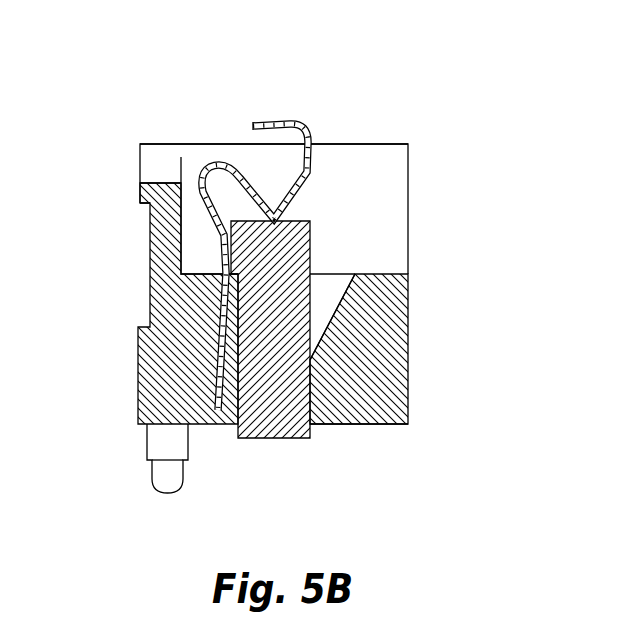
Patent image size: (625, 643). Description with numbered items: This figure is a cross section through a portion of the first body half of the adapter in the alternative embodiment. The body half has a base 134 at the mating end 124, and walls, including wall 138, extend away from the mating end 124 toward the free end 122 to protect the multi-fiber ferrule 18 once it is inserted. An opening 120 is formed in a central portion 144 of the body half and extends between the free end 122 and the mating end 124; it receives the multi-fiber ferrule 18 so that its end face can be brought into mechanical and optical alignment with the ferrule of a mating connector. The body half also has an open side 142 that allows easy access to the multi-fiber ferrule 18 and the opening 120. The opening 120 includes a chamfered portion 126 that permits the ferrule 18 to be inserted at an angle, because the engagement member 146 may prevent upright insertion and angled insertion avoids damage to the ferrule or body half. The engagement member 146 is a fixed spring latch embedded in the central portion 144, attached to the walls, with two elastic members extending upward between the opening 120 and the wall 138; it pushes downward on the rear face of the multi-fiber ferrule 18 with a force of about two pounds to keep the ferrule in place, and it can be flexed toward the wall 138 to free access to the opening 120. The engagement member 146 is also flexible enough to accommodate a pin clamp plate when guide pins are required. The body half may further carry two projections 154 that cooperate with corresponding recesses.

The open side 142 is at (409, 146).
The free end 122 is at (166, 143).
The base 134 is at (138, 375).
The wall 138 is at (140, 209).
The central portion 144 is at (198, 273).
The multi-fiber ferrule 18 is at (316, 247).
The chamfered portion 126 is at (410, 320).
The opening 120 is at (330, 289).
The mating end 124 is at (388, 425).
The projection 154 is at (150, 470).
The engagement member 146 is at (283, 121).